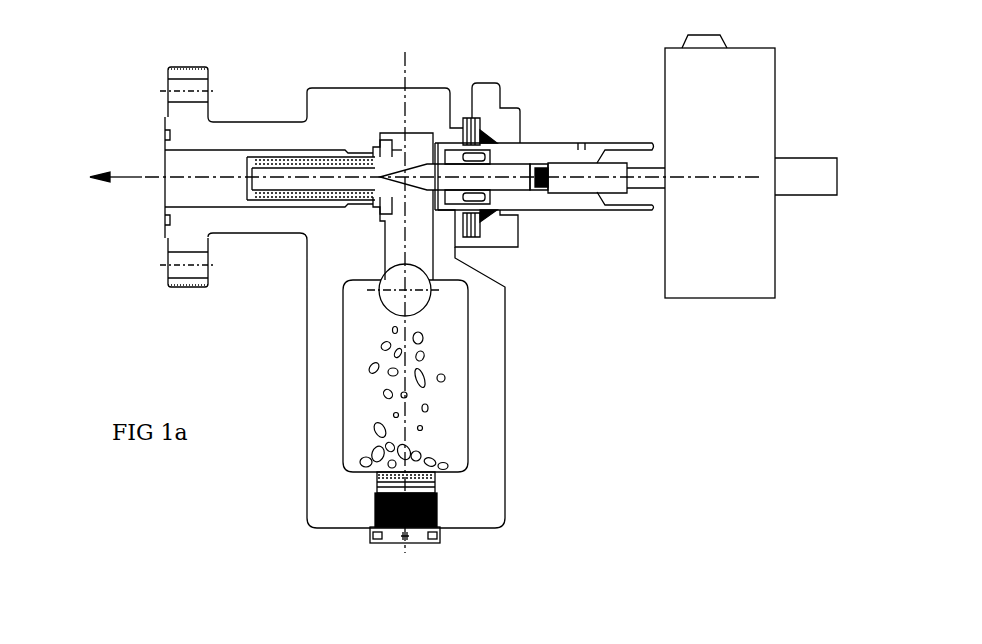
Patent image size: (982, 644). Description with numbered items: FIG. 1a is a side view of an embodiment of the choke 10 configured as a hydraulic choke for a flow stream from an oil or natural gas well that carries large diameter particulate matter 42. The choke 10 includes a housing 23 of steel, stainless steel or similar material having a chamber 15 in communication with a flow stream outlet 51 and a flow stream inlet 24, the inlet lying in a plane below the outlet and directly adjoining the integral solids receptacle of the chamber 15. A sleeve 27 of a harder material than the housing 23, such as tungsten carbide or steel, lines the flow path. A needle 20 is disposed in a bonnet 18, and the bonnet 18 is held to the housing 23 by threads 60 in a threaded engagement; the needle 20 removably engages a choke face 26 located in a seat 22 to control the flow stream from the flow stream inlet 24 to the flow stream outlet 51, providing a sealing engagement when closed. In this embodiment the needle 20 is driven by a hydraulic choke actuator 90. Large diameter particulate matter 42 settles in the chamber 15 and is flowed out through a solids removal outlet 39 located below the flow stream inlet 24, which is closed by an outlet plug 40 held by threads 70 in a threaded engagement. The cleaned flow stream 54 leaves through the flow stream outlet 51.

The choke 10 is at (545, 293).
The chamber 15 is at (397, 143).
The bonnet 18 is at (482, 130).
The needle 20 is at (385, 210).
The seat 22 is at (368, 200).
The housing 23 is at (387, 100).
The flow stream inlet 24 is at (398, 302).
The choke face 26 is at (373, 153).
The sleeve 27 is at (293, 165).
The solids removal outlet 39 is at (378, 478).
The outlet plug 40 is at (418, 530).
The large diameter particulate matter 42 is at (447, 378).
The flow stream outlet 51 is at (190, 148).
The cleaned flow stream 54 is at (122, 175).
The threads 60 is at (467, 123).
The threads 70 is at (440, 513).
The hydraulic choke actuator 90 is at (748, 272).